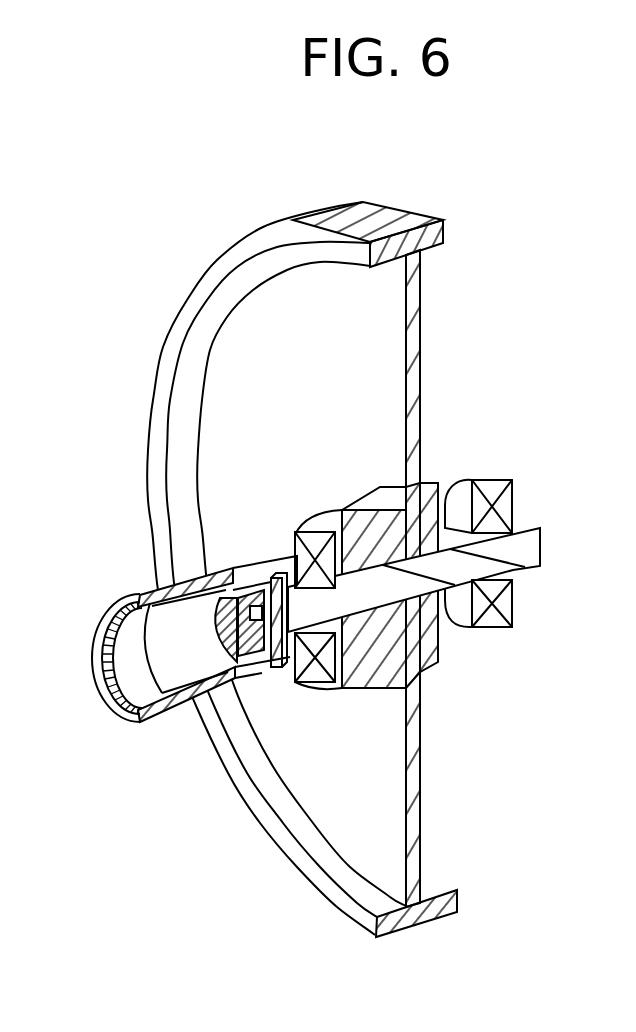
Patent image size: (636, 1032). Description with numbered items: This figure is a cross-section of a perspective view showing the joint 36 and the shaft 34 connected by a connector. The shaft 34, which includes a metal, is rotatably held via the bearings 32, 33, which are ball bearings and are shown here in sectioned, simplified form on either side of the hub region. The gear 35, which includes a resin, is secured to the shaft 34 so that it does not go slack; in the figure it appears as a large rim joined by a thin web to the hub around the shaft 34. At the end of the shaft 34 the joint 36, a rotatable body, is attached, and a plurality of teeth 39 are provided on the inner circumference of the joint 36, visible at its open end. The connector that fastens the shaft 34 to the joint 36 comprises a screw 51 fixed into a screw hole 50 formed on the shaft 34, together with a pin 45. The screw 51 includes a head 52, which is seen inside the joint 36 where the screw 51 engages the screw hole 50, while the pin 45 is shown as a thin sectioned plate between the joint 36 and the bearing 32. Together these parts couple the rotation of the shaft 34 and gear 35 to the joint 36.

The gear 35 is at (420, 206).
The shaft 34 is at (540, 538).
The bearing 33 is at (494, 632).
The bearing 32 is at (318, 684).
The pin 45 is at (297, 585).
The screw hole 50 is at (266, 622).
The screw 51 is at (252, 655).
The head 52 is at (220, 647).
The joint 36 is at (178, 666).
The teeth 39 is at (110, 683).